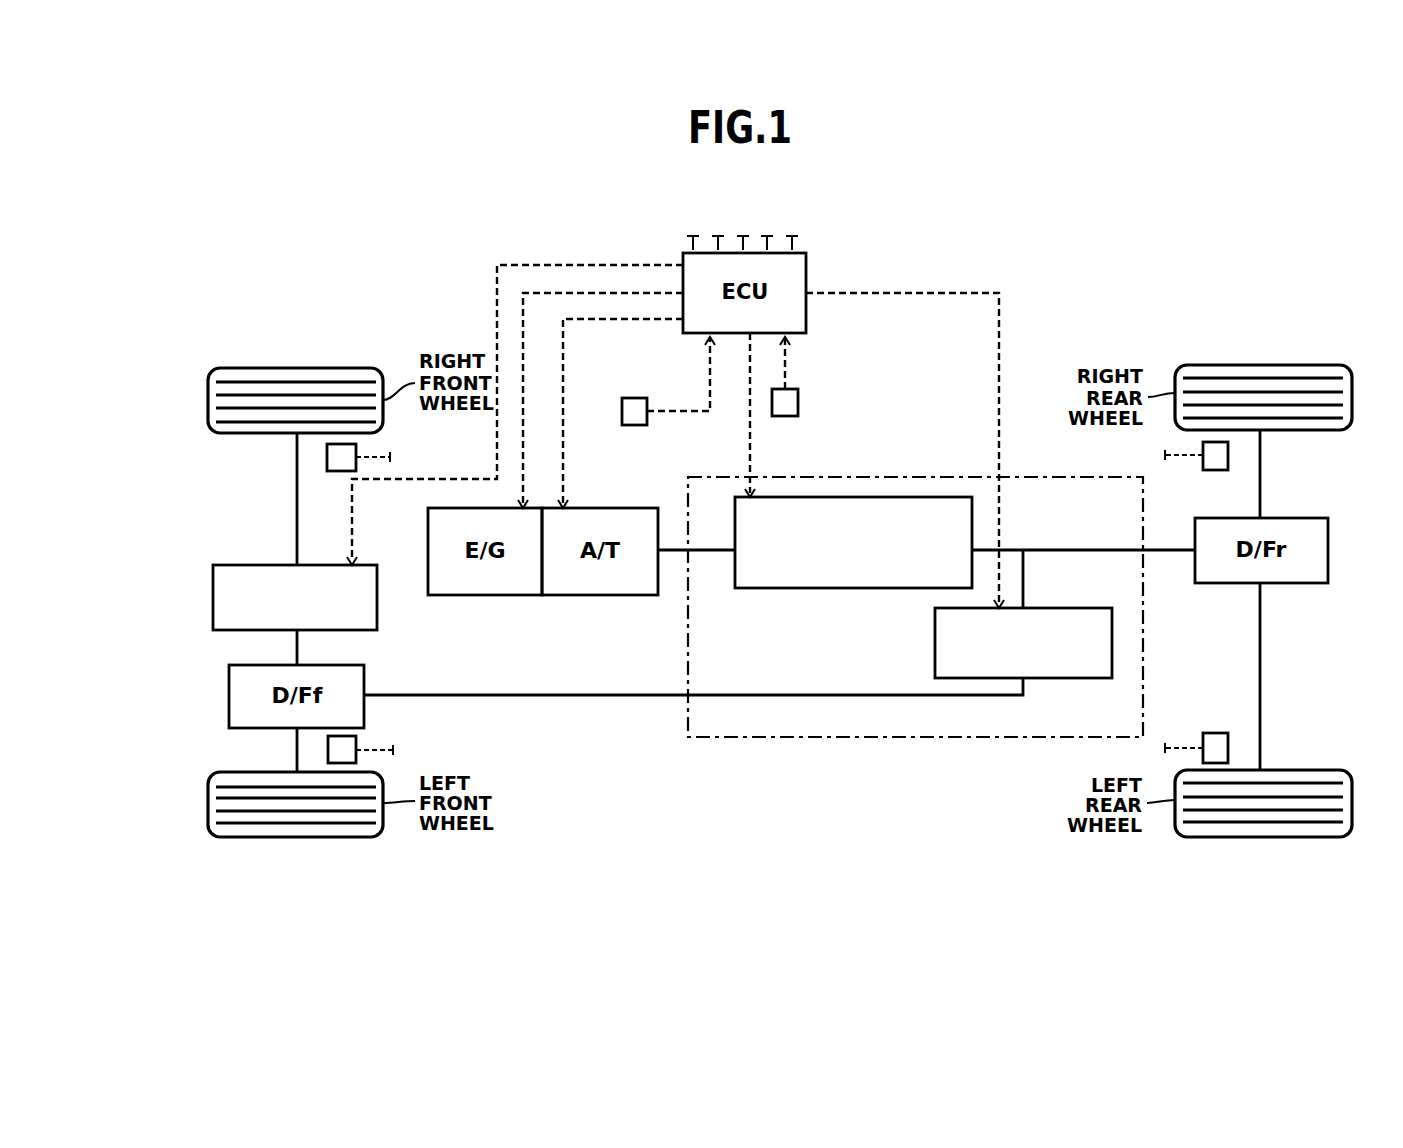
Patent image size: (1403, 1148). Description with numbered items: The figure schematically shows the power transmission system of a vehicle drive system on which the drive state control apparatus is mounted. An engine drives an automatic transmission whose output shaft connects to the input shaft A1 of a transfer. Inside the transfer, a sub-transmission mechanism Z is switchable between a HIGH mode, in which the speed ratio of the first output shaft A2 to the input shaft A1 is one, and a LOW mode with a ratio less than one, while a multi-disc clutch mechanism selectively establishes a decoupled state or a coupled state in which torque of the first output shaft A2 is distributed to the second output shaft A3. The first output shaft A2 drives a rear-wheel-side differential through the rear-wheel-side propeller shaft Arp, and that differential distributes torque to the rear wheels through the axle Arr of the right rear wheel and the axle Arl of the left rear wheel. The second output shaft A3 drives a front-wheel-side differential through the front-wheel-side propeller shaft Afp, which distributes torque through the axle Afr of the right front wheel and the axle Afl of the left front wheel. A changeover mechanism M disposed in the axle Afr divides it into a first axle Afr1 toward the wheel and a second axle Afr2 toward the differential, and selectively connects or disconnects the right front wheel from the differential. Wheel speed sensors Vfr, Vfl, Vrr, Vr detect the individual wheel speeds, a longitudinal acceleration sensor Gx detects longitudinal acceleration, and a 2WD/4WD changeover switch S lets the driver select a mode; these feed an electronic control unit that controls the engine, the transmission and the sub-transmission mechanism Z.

The wheel speed sensor Vfr is at (356, 450).
The wheel speed sensor Vfl is at (356, 742).
The wheel speed sensor Vrr is at (1218, 470).
The left rear wheel speed sensor Vr is at (1217, 733).
The axle of the right front wheel Afr is at (166, 483).
The first axle Afr1 is at (297, 496).
The second axle Afr2 is at (297, 650).
The axle of the left front wheel Afl is at (297, 750).
The front-wheel-side propeller shaft Afp is at (463, 695).
The input shaft A1 is at (710, 550).
The first output shaft A2 is at (1100, 550).
The second output shaft A3 is at (750, 695).
The rear-wheel-side propeller shaft Arp is at (1172, 552).
The axle of the right rear wheel Arr is at (1260, 478).
The axle of the left rear wheel Arl is at (1260, 677).
The changeover mechanism M is at (324, 563).
The 2WD/4WD changeover switch S is at (633, 425).
The longitudinal acceleration sensor Gx is at (785, 416).
The sub-transmission mechanism Z is at (833, 588).